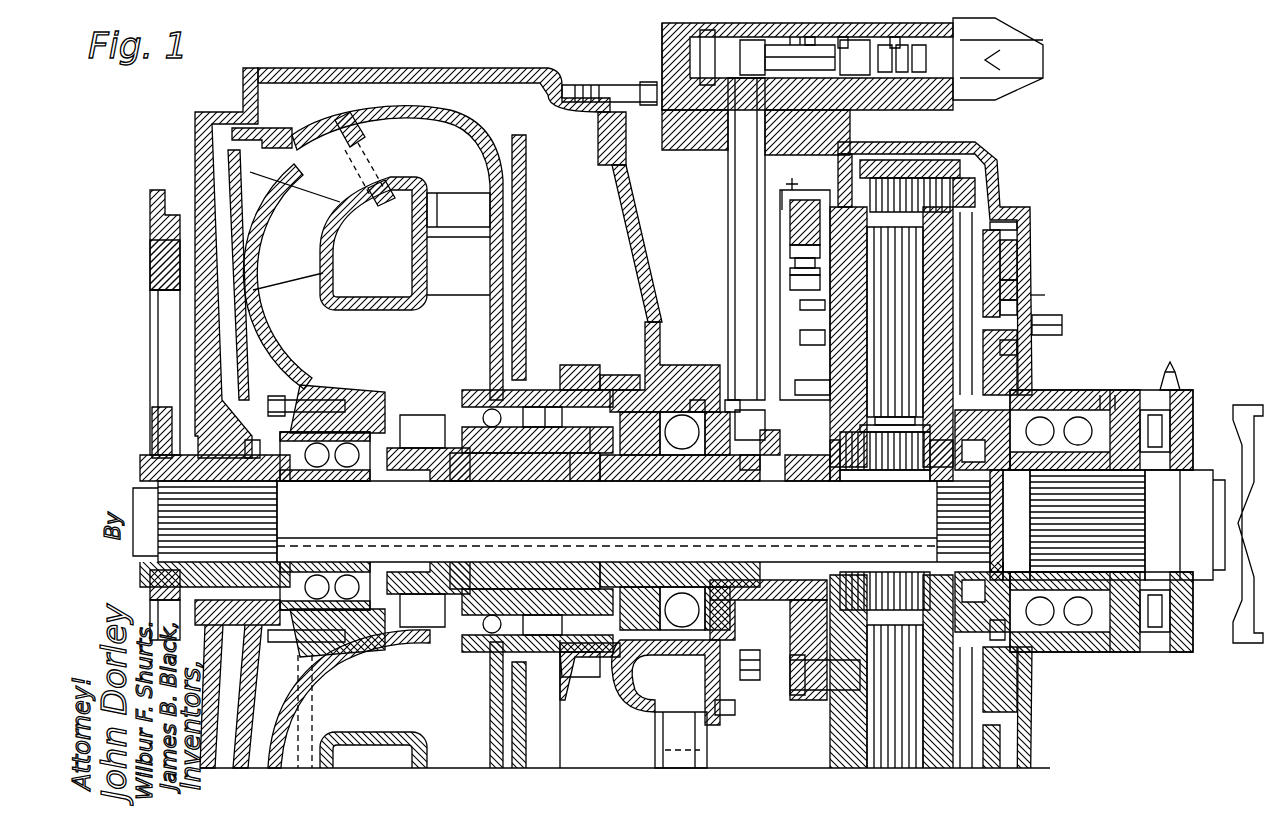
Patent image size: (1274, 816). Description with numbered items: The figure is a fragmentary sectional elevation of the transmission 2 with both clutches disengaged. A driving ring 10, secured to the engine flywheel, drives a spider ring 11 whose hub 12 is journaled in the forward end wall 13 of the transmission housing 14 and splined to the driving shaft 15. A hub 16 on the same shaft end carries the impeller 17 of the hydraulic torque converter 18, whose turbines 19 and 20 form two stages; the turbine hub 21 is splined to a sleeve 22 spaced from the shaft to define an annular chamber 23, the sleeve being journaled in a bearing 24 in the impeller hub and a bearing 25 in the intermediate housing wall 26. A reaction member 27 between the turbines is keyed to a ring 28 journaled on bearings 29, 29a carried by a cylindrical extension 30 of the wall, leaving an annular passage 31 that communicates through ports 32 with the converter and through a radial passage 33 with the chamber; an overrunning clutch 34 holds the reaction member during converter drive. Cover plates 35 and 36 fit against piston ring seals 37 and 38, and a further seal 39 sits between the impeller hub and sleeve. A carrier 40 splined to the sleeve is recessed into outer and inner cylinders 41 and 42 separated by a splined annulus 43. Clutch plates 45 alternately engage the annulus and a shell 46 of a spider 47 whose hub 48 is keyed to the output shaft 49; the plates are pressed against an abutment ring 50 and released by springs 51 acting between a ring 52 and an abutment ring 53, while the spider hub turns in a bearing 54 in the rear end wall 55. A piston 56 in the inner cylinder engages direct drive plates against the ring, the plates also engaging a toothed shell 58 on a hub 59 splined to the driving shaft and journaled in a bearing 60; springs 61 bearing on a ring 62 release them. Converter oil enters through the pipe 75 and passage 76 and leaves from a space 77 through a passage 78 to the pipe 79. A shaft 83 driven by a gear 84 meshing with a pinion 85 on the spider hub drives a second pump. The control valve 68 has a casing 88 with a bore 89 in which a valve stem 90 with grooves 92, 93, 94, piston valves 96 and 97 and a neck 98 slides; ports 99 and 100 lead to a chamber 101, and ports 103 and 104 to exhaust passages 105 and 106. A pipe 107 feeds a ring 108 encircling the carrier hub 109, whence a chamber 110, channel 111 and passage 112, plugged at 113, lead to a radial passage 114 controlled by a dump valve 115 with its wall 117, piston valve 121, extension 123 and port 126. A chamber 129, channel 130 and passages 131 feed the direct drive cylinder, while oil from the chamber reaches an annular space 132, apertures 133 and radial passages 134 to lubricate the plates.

The transmission 2 is at (1052, 300).
The driving ring 10 is at (150, 206).
The spider ring 11 is at (150, 260).
The hub 12 is at (175, 458).
The forward end wall 13 is at (216, 352).
The transmission housing 14 is at (319, 59).
The driving shaft 15 is at (352, 519).
The hub 16 is at (280, 486).
The impeller 17 is at (297, 285).
The hydraulic torque converter 18 is at (337, 109).
The turbine 19 is at (410, 143).
The turbine 20 is at (455, 296).
The turbine hub 21 is at (426, 482).
The sleeve 22 is at (521, 482).
The annular chamber 23 is at (577, 488).
The bearing 24 is at (362, 425).
The bearing 25 is at (679, 456).
The intermediate housing wall 26 is at (665, 318).
The reaction member 27 is at (442, 198).
The ring 28 is at (570, 345).
The bearing 29 is at (490, 454).
The bearing 29a is at (585, 368).
The cylindrical extension 30 is at (557, 454).
The annular passage 31 is at (601, 482).
The ports 32 is at (422, 431).
The radial passage 33 is at (626, 488).
The overrunning clutch 34 is at (542, 415).
The forward cover plate 35 is at (272, 399).
The rear cover plate 36 is at (527, 298).
The piston ring seal 37 is at (251, 438).
The piston ring seal 38 is at (625, 378).
The piston ring seal 39 is at (372, 482).
The carrier 40 is at (826, 366).
The outer cylinder 41 is at (840, 262).
The inner cylinder 42 is at (840, 332).
The annulus 43 is at (1010, 290).
The clutch plates 45 is at (972, 240).
The shell 46 is at (992, 188).
The spider 47 is at (1018, 385).
The spider hub 48 is at (1067, 525).
The output shaft 49 is at (1115, 525).
The abutment ring 50 is at (1010, 280).
The helical springs 51 is at (905, 228).
The ring 52 is at (893, 200).
The abutment ring 53 is at (942, 180).
The bearing 54 is at (1112, 398).
The rear end wall 55 is at (1065, 388).
The piston 56 is at (878, 300).
The toothed shell 58 is at (866, 471).
The hub 59 is at (895, 477).
The bearing 60 is at (982, 440).
The helical springs 61 is at (835, 471).
The ring 62 is at (895, 471).
The control valve 68 is at (657, 46).
The pipe 75 is at (708, 755).
The passage 76 is at (593, 683).
The space 77 is at (561, 768).
The passage 78 is at (719, 652).
The pipe 79 is at (658, 768).
The shaft 83 is at (1062, 320).
The gear 84 is at (1005, 240).
The pinion 85 is at (998, 640).
The casing 88 is at (803, 24).
The bore 89 is at (895, 33).
The valve stem 90 is at (1008, 88).
The annular groove 92 is at (882, 80).
The annular groove 93 is at (900, 80).
The annular groove 94 is at (918, 80).
The piston valve 96 is at (855, 56).
The piston valve 97 is at (751, 57).
The reduced neck 98 is at (800, 56).
The annular port 99 is at (793, 30).
The annular port 100 is at (730, 20).
The chamber 101 is at (752, 239).
The annular port 103 is at (845, 30).
The annular port 104 is at (675, 27).
The exhaust passage 105 is at (878, 184).
The exhaust passage 106 is at (700, 150).
The pipe 107 is at (782, 214).
The ring 108 is at (826, 392).
The hub 109 is at (792, 470).
The chamber 110 is at (752, 425).
The annular channel 111 is at (718, 462).
The longitudinal passage 112 is at (746, 470).
The plug 113 is at (704, 460).
The radial passage 114 is at (830, 346).
The dump valve 115 is at (796, 180).
The wall 117 is at (792, 300).
The piston valve 121 is at (786, 232).
The reduced extension 123 is at (790, 252).
The port 126 is at (800, 262).
The chamber 129 is at (900, 422).
The annular channel 130 is at (766, 567).
The longitudinal passages 131 is at (800, 660).
The annular space 132 is at (885, 494).
The apertures 133 is at (1040, 352).
The radial passages 134 is at (1012, 306).